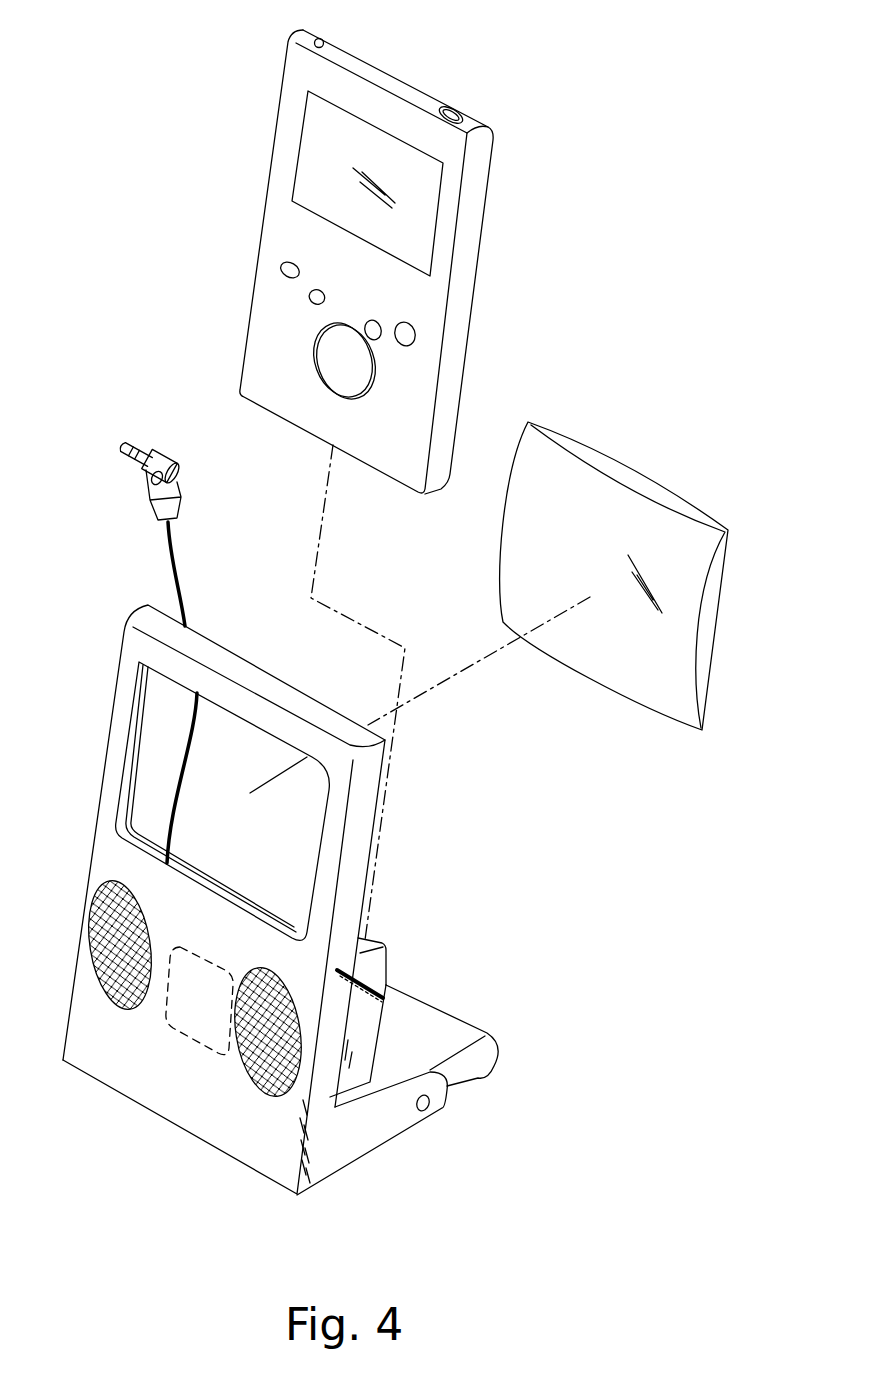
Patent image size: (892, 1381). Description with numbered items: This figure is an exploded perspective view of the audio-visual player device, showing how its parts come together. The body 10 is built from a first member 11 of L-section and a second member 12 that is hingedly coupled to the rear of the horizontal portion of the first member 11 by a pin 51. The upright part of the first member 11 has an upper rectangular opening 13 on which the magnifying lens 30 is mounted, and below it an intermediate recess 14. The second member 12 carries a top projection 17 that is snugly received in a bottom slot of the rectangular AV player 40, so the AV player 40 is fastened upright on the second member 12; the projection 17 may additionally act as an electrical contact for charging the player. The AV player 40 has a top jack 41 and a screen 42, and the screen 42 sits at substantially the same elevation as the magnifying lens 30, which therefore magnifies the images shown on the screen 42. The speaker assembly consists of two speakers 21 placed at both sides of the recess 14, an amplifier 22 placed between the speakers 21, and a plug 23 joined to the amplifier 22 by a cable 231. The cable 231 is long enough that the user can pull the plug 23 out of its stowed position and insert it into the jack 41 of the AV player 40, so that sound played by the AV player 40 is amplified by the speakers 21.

The body 10 is at (432, 1109).
The first member 11 is at (363, 1147).
The second member 12 is at (473, 1070).
The upper rectangular opening 13 is at (147, 763).
The intermediate recess 14 is at (372, 1080).
The top projection 17 is at (389, 982).
The speakers 21 is at (368, 937).
The amplifier 22 is at (187, 1032).
The plug 23 is at (167, 457).
The cable 231 is at (177, 565).
The magnifying lens 30 is at (632, 700).
The AV player 40 is at (461, 303).
The top jack 41 is at (324, 36).
The screen 42 is at (312, 167).
The pin 51 is at (425, 1107).